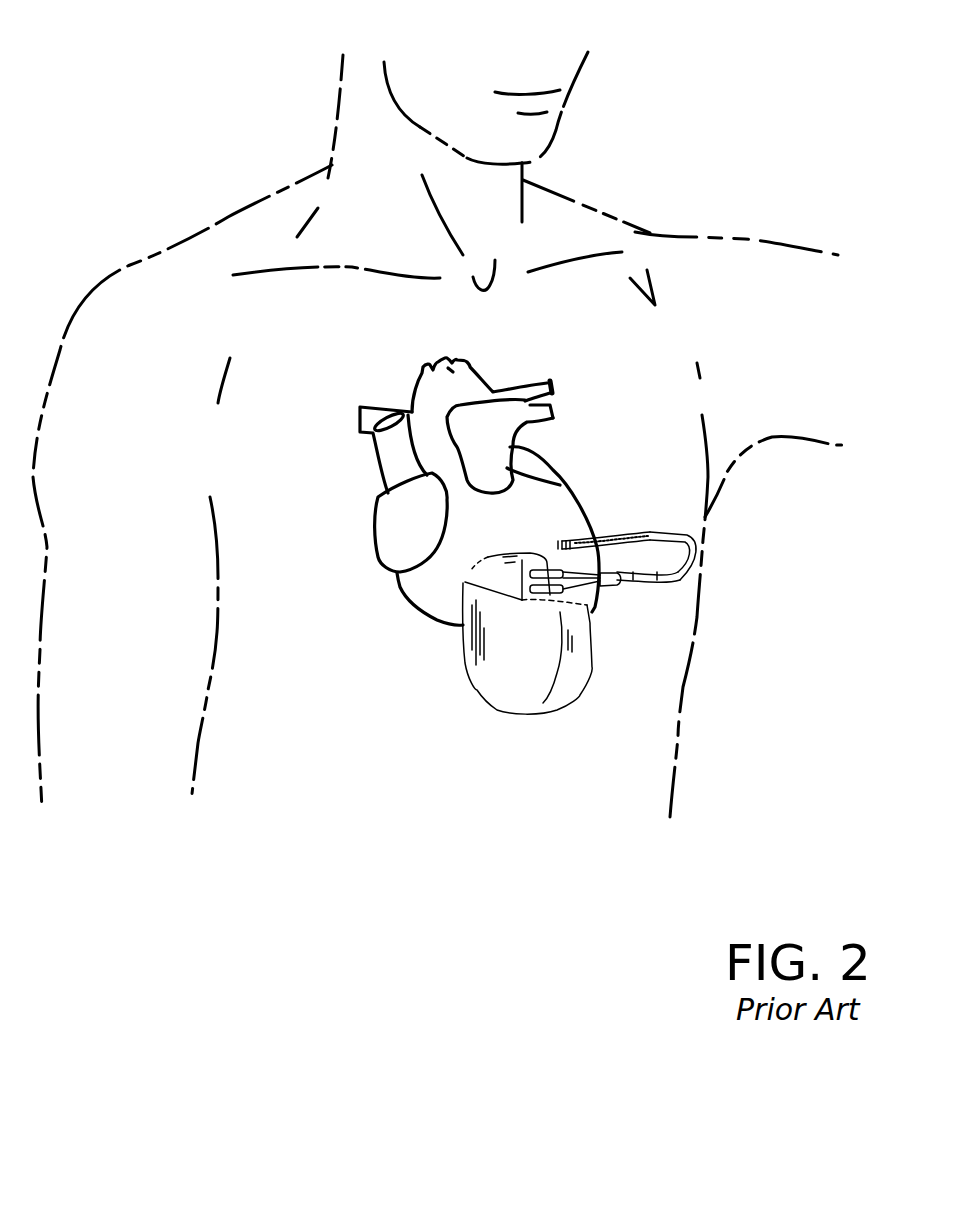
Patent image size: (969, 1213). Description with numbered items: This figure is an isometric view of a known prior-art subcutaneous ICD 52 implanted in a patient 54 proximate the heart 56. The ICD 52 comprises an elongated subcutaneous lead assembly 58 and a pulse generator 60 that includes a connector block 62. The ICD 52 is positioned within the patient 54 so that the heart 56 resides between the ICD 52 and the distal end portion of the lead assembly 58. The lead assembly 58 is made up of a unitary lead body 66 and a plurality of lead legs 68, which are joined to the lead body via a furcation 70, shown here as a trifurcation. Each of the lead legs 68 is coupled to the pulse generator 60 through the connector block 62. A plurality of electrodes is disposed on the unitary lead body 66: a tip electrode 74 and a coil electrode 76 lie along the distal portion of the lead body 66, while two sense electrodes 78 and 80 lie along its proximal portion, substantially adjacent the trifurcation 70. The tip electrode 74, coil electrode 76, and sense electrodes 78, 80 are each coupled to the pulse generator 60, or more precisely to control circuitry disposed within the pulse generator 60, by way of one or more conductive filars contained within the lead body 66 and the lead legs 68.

The subcutaneous ICD 52 is at (522, 640).
The patient 54 is at (717, 252).
The heart 56 is at (392, 535).
The subcutaneous lead assembly 58 is at (690, 578).
The pulse generator 60 is at (590, 668).
The connector block 62 is at (490, 570).
The unitary lead body 66 is at (697, 553).
The lead legs 68 is at (552, 611).
The furcation 70 is at (607, 577).
The tip electrode 74 is at (562, 540).
The coil electrode 76 is at (613, 532).
The sense electrode 78 is at (633, 586).
The sense electrode 80 is at (657, 587).